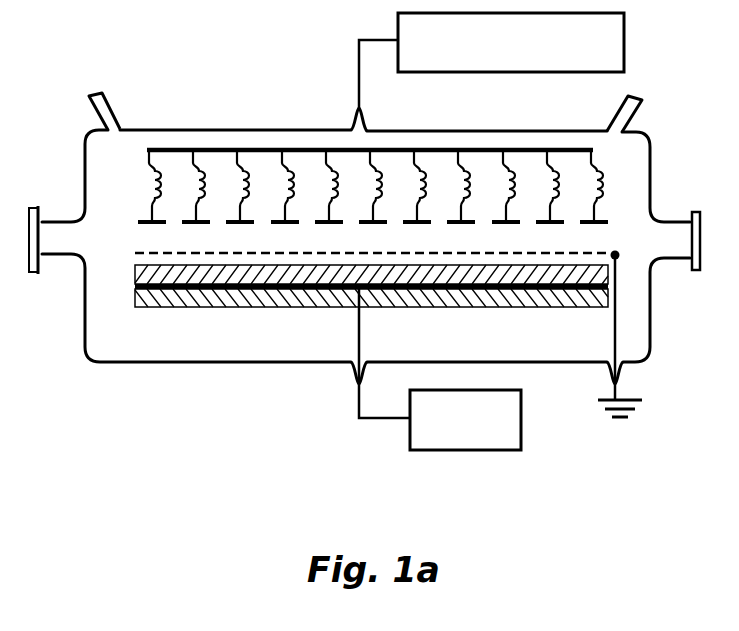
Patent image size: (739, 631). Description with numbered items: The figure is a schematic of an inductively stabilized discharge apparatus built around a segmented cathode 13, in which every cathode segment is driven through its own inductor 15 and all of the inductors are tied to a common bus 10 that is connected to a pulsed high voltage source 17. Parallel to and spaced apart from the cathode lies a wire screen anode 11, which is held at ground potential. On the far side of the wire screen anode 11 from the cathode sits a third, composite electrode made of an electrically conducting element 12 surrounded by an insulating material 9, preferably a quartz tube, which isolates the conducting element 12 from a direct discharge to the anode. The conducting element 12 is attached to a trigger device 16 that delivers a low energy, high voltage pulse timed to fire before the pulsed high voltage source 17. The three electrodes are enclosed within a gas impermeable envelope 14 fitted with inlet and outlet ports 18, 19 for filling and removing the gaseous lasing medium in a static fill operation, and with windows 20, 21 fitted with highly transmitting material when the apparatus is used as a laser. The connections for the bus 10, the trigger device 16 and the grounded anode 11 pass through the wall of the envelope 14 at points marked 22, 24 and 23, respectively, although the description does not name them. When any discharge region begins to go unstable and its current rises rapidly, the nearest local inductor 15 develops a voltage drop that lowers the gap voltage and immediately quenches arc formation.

The insulating material 9 is at (218, 297).
The common bus 10 is at (292, 148).
The wire screen anode 11 is at (530, 256).
The electrically conducting element 12 is at (268, 292).
The segmented cathode 13 is at (206, 208).
The gas impermeable envelope 14 is at (158, 127).
The inductor 15 is at (282, 176).
The trigger device 16 is at (492, 451).
The pulsed high voltage source 17 is at (398, 25).
The port 18 is at (640, 97).
The port 19 is at (93, 95).
The window 20 is at (33, 274).
The window 21 is at (694, 273).
The high voltage feedthrough 22 is at (368, 128).
The ground feedthrough 23 is at (624, 374).
The trigger feedthrough 24 is at (354, 371).